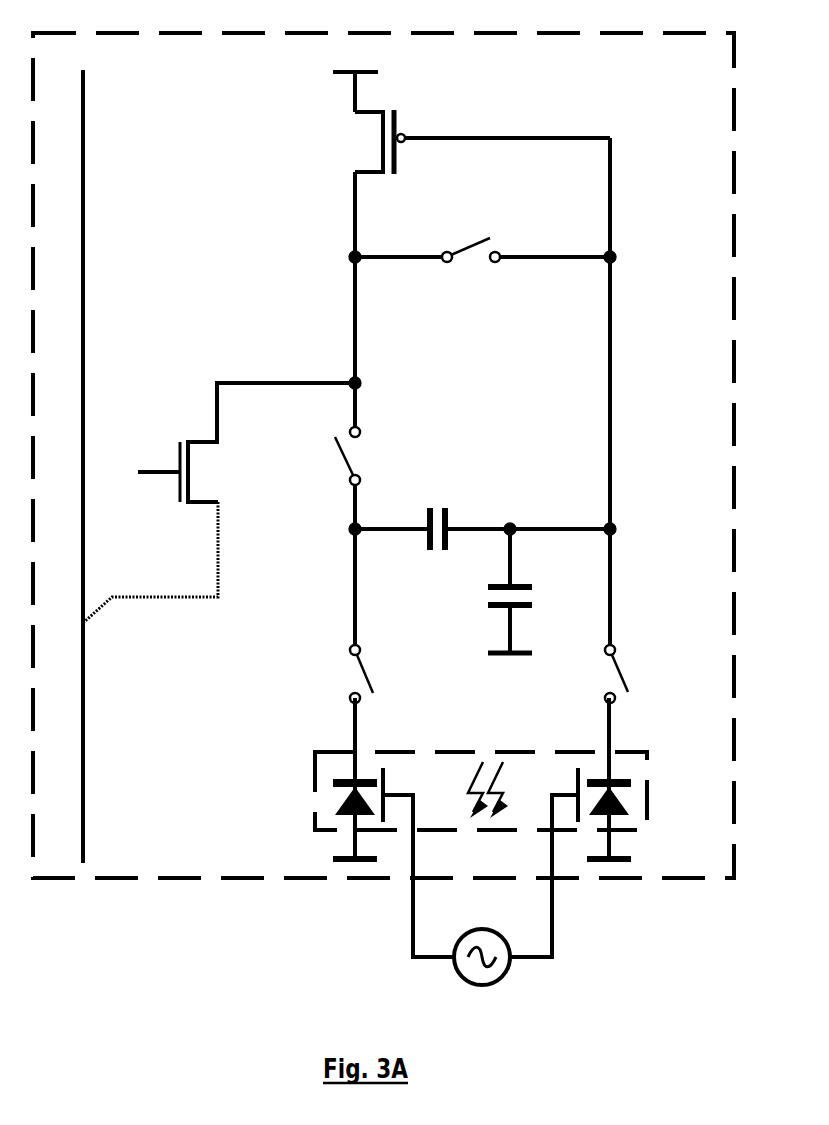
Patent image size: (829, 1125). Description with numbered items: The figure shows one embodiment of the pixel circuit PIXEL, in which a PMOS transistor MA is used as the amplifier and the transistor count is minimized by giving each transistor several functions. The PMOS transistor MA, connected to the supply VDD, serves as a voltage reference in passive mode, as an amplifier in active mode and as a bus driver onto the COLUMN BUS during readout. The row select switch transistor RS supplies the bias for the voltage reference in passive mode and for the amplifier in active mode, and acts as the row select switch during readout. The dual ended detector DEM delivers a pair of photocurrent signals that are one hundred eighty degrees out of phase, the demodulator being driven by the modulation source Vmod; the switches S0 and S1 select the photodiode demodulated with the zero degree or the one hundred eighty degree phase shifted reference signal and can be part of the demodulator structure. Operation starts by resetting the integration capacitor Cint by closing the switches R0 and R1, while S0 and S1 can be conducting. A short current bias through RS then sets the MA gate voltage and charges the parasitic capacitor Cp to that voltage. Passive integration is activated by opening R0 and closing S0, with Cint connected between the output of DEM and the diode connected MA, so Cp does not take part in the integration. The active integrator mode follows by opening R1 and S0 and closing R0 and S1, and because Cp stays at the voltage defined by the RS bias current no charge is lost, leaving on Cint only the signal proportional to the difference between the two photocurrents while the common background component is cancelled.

The pixel circuit PIXEL is at (384, 442).
The column bus COLUMN BUS is at (68, 466).
The supply voltage VDD is at (355, 78).
The PMOS transistor MA is at (482, 126).
The reset switch R1 is at (482, 268).
The row select switch transistor RS is at (219, 503).
The reset switch R0 is at (369, 456).
The integration capacitor Cint is at (482, 512).
The parasitic capacitor Cp is at (525, 591).
The switch S0 is at (340, 674).
The switch S1 is at (596, 674).
The photodiode DEM is at (514, 827).
The modulation voltage source Vmod is at (485, 939).